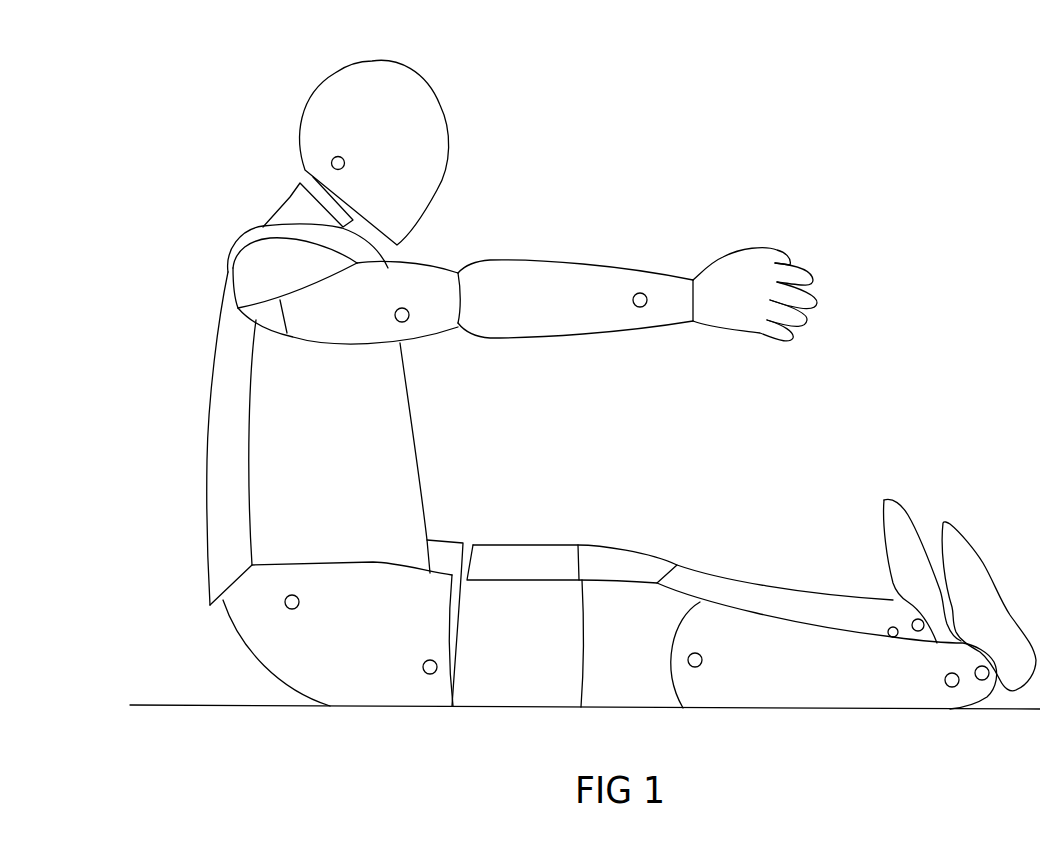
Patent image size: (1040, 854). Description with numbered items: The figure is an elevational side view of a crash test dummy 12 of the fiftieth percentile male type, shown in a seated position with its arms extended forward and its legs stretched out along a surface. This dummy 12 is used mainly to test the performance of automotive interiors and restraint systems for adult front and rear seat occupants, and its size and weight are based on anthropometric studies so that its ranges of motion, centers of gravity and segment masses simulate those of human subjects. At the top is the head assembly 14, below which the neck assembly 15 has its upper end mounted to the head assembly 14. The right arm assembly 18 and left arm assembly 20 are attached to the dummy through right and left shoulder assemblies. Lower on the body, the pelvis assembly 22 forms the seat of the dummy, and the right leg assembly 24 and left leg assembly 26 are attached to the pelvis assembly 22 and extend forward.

The crash test dummy 12 is at (298, 132).
The head assembly 14 is at (437, 90).
The neck assembly 15 is at (308, 203).
The right arm assembly 18 is at (627, 270).
The left arm assembly 20 is at (437, 265).
The pelvis assembly 22 is at (250, 672).
The right leg assembly 24 is at (768, 637).
The left leg assembly 26 is at (740, 592).